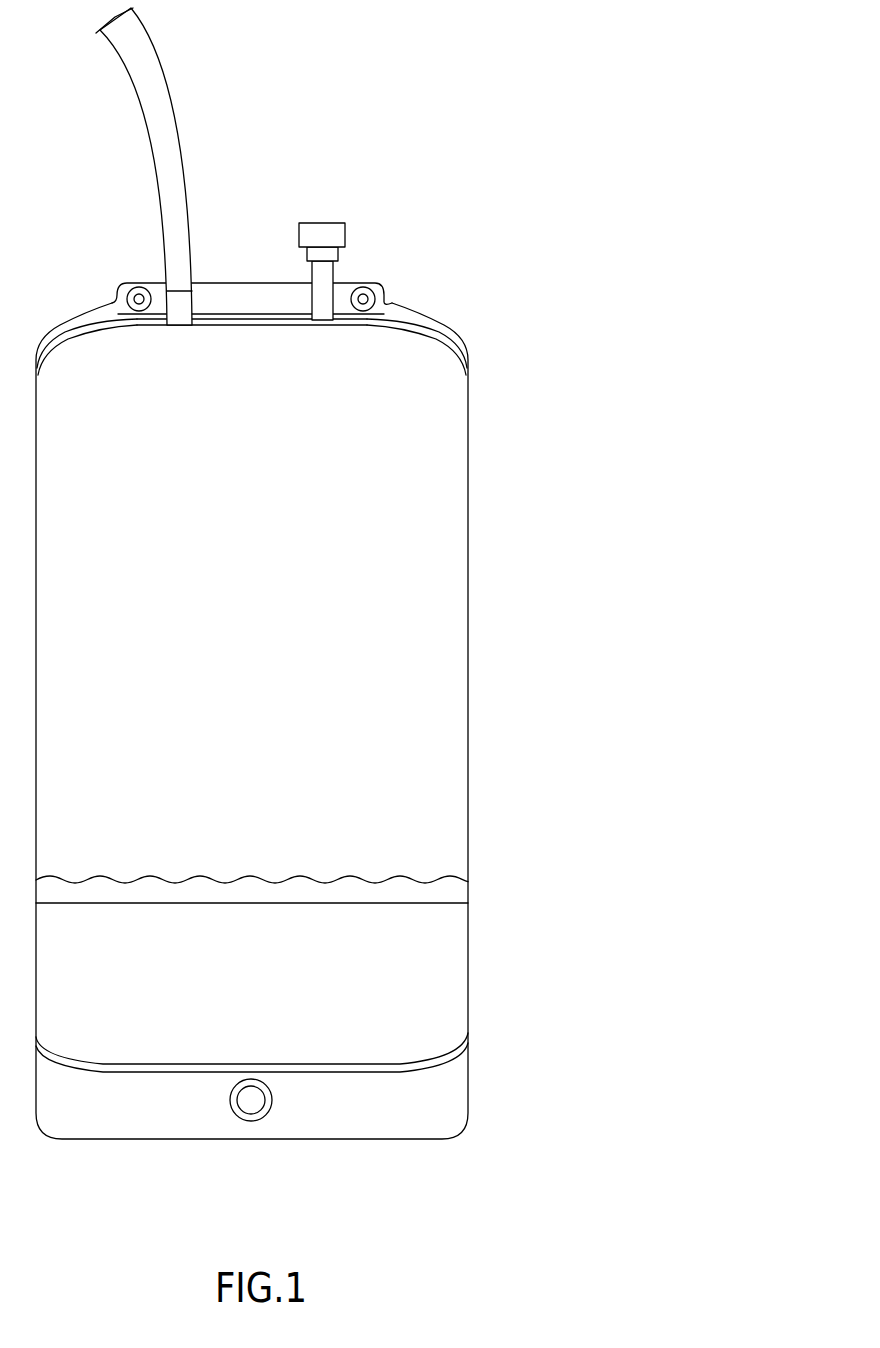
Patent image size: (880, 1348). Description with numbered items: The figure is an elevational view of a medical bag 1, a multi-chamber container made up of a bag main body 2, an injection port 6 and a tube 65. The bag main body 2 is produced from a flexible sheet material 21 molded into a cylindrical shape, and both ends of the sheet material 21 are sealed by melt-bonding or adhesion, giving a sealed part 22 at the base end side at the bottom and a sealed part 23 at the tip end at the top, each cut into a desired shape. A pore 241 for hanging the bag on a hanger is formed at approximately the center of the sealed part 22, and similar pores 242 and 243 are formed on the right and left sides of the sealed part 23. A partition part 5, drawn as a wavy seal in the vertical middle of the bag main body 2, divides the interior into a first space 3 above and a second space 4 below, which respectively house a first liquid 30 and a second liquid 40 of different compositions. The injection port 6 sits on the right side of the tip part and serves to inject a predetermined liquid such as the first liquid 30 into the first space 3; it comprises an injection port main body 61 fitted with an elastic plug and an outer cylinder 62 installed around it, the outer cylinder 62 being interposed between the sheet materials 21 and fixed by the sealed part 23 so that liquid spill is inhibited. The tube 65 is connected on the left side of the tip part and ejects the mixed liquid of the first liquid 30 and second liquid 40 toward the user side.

The medical bag 1 is at (521, 194).
The bag main body 2 is at (468, 538).
The sheet material 21 is at (423, 626).
The sealed part at the base end side 22 is at (433, 1103).
The sealed part at the tip end 23 is at (236, 292).
The pore 241 is at (253, 1103).
The pore 242 is at (364, 295).
The pore 243 is at (138, 288).
The first space 3 is at (408, 435).
The first liquid 30 is at (408, 478).
The second space 4 is at (433, 968).
The second liquid 40 is at (432, 1005).
The partition part 5 is at (448, 890).
The injection port 6 is at (334, 232).
The injection port main body 61 is at (318, 236).
The outer cylinder 62 is at (326, 302).
The tube 65 is at (178, 138).